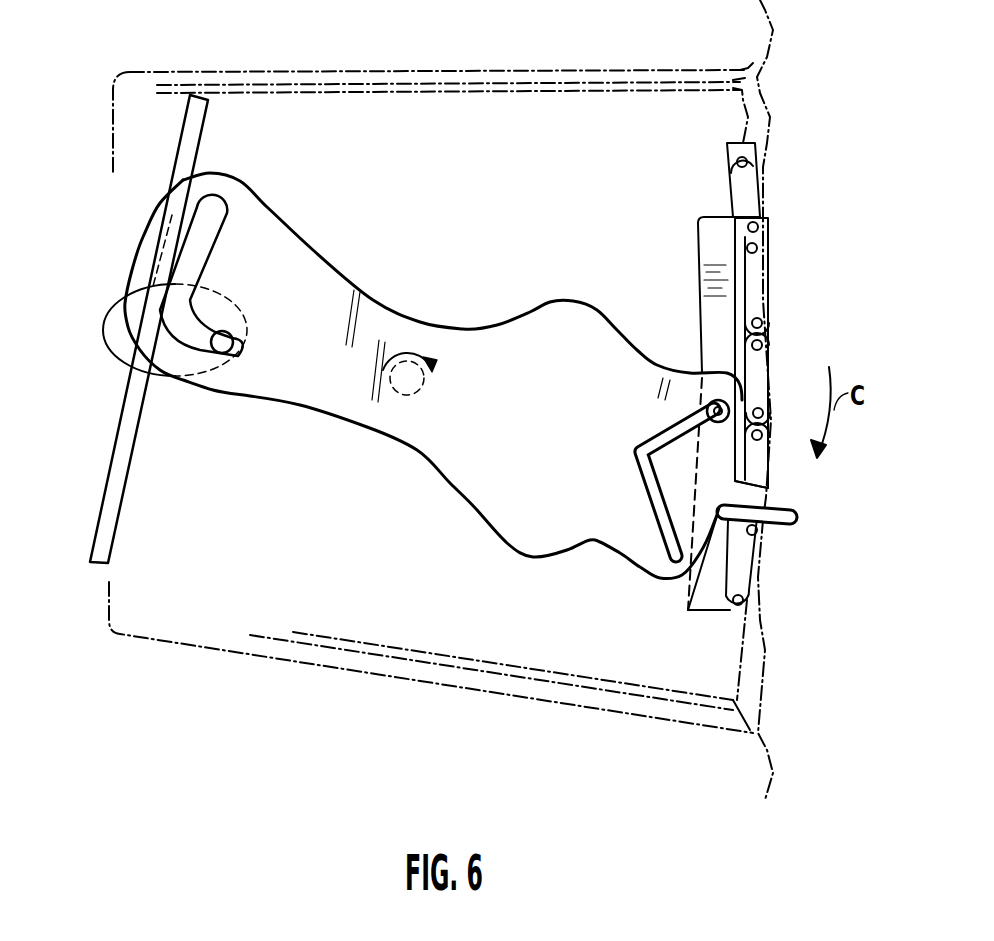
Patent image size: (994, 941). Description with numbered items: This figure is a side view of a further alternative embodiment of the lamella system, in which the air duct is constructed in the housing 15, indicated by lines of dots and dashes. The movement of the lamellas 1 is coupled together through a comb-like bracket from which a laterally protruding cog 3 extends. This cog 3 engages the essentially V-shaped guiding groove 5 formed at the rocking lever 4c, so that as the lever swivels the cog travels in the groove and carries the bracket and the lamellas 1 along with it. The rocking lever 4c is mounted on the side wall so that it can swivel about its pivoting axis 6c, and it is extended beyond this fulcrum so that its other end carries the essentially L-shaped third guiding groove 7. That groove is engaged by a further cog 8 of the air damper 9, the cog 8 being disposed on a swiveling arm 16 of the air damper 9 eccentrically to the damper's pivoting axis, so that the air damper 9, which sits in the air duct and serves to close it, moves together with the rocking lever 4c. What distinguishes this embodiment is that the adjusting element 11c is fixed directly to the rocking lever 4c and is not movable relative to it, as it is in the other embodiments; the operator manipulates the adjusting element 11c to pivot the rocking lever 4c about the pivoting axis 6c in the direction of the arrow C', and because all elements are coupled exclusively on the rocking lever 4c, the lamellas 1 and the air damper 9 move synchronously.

The lamellas 1 is at (755, 267).
The cog 3 is at (776, 484).
The rocking lever 4c is at (495, 503).
The guiding groove 5 is at (663, 513).
The pivoting axis 6c is at (400, 393).
The third guiding groove 7 is at (207, 229).
The cog 8 is at (223, 360).
The air damper 9 is at (118, 452).
The adjusting element 11c is at (800, 518).
The housing 15 is at (288, 72).
The swiveling arm 16 is at (113, 322).